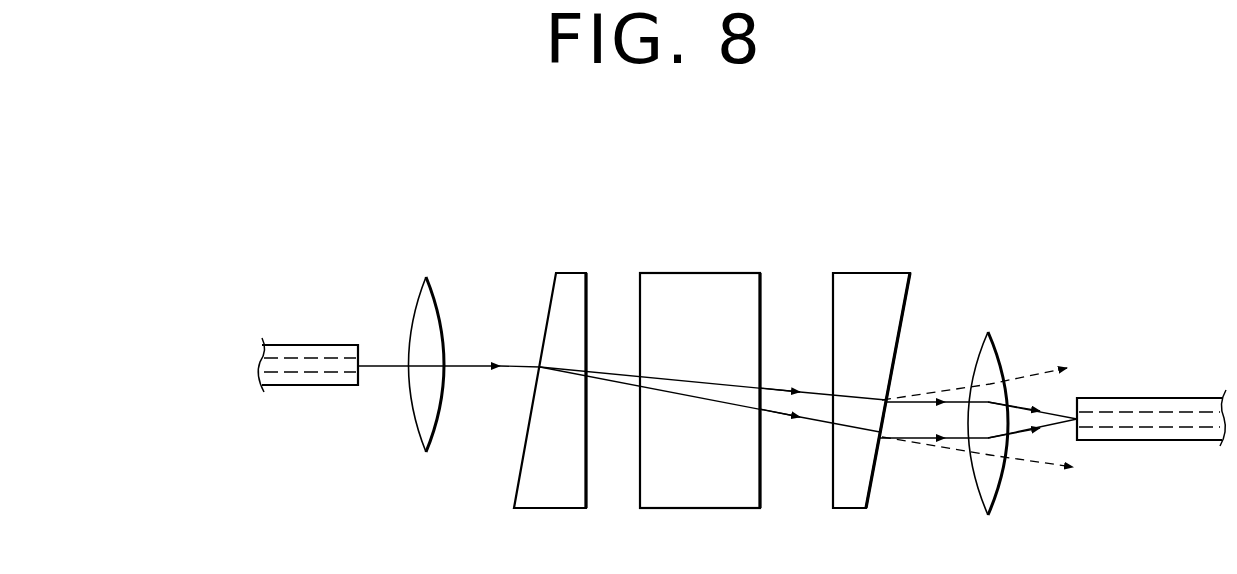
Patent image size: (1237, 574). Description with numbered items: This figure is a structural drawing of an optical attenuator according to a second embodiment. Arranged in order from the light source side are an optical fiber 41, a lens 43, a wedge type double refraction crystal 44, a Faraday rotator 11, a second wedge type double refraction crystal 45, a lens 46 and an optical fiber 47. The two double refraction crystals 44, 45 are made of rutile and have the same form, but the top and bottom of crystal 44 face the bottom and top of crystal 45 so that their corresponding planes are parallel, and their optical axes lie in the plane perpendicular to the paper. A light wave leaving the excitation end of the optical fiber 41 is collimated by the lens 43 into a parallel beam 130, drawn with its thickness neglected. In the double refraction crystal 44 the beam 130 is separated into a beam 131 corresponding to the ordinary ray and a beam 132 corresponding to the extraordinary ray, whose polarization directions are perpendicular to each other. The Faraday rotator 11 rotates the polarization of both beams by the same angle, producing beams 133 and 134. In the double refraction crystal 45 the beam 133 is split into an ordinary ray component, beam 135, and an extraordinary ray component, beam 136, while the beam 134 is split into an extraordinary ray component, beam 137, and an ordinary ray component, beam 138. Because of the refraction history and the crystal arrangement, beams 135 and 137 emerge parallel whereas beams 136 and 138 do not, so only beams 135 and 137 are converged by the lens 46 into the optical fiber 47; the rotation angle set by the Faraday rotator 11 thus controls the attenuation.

The Faraday rotator 11 is at (697, 258).
The optical fiber 41 is at (312, 345).
The lens 43 is at (437, 276).
The wedge type double refraction crystal 44 is at (569, 273).
The wedge type double refraction crystal 45 is at (868, 273).
The lens 46 is at (997, 343).
The optical fiber 47 is at (1140, 398).
The beam 130 is at (472, 365).
The beam 131 is at (610, 372).
The beam 132 is at (614, 385).
The beam 133 is at (778, 390).
The beam 134 is at (783, 420).
The beam 135 is at (917, 396).
The beam 136 is at (953, 385).
The beam 137 is at (925, 444).
The beam 138 is at (909, 440).